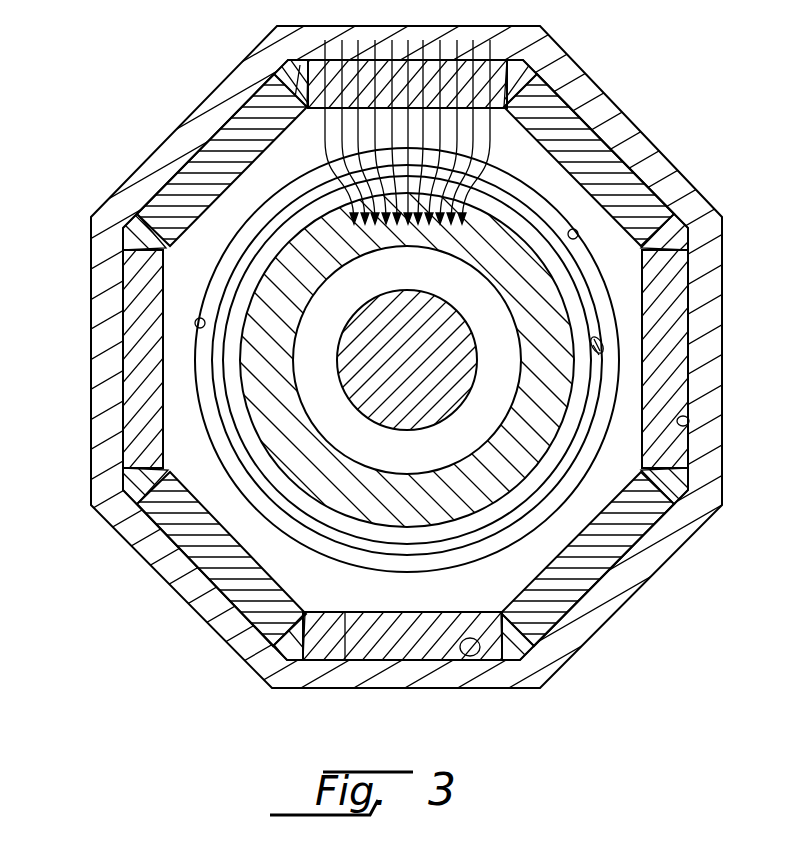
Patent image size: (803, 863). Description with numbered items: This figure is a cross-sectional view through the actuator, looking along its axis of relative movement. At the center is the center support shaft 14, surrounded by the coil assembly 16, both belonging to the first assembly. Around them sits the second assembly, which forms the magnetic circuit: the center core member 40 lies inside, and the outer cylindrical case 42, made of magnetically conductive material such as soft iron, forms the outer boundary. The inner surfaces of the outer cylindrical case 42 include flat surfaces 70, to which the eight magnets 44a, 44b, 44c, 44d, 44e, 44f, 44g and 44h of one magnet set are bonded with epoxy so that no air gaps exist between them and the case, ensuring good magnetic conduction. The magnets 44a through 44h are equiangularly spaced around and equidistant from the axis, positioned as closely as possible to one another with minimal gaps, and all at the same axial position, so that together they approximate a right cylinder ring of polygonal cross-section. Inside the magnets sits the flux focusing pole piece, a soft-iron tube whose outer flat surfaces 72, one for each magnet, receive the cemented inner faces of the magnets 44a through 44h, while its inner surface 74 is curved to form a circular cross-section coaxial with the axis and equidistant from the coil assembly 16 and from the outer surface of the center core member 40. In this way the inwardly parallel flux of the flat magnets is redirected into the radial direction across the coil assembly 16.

The center support shaft 14 is at (391, 352).
The coil assembly 16 is at (573, 455).
The center core member 40 is at (547, 333).
The outer cylindrical case 42 is at (683, 197).
The magnet 44a is at (670, 298).
The magnet 44b is at (570, 587).
The magnet 44c is at (433, 650).
The magnet 44d is at (227, 580).
The magnet 44e is at (137, 395).
The magnet 44f is at (238, 128).
The magnet 44g is at (448, 70).
The magnet 44h is at (562, 118).
The flat surfaces 70 is at (689, 420).
The outer flat surfaces 72 is at (345, 660).
The inner surface 74 is at (195, 323).